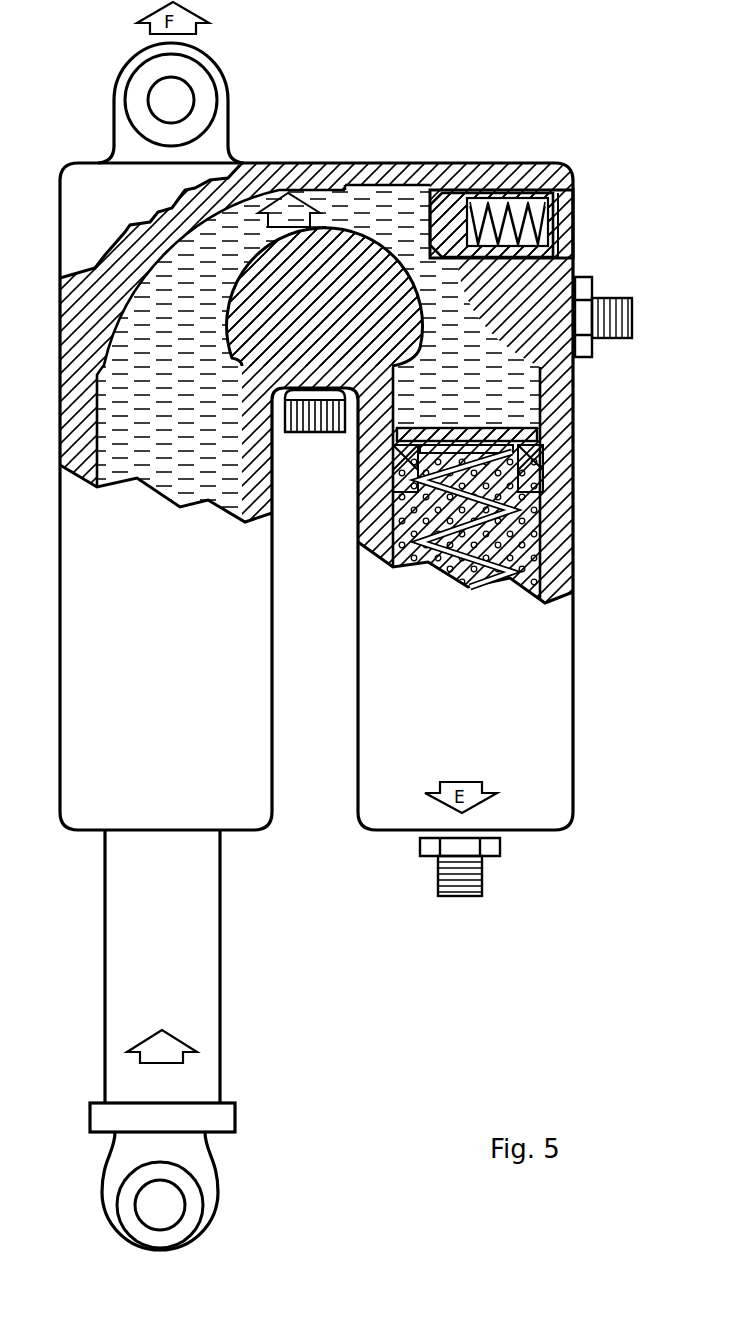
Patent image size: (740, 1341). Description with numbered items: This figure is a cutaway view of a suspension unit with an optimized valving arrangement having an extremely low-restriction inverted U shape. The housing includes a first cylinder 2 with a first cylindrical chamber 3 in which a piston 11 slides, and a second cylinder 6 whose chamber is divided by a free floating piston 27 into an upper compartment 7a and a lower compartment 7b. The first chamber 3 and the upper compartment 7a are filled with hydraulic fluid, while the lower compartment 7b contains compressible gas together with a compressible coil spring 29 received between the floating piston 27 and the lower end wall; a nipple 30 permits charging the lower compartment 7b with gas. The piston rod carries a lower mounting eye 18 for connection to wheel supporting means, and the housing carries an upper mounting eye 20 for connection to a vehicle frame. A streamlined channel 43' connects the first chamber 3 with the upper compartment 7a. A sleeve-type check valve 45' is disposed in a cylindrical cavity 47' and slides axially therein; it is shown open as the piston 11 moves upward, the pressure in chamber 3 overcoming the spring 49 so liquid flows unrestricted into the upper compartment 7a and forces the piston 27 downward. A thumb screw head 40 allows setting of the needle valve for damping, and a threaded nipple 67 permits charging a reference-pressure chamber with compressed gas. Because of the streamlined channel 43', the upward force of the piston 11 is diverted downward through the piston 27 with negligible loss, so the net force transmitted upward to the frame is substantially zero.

The first cylinder 2 is at (58, 540).
The first cylindrical chamber 3 is at (176, 451).
The second cylinder 6 is at (575, 503).
The upper compartment 7a is at (480, 413).
The lower compartment 7b is at (439, 529).
The piston 11 is at (113, 953).
The lower mounting eye 18 is at (128, 1206).
The upper mounting eye 20 is at (204, 100).
The free floating piston 27 is at (530, 424).
The compressible coil spring 29 is at (515, 570).
The nipple 30 is at (462, 897).
The thumb screw head 40 is at (318, 433).
The streamlined channel 43' is at (370, 670).
The sleeve-type check valve 45' is at (400, 190).
The cylindrical cavity 47' is at (376, 156).
The spring 49 is at (508, 210).
The threaded nipple 67 is at (633, 320).